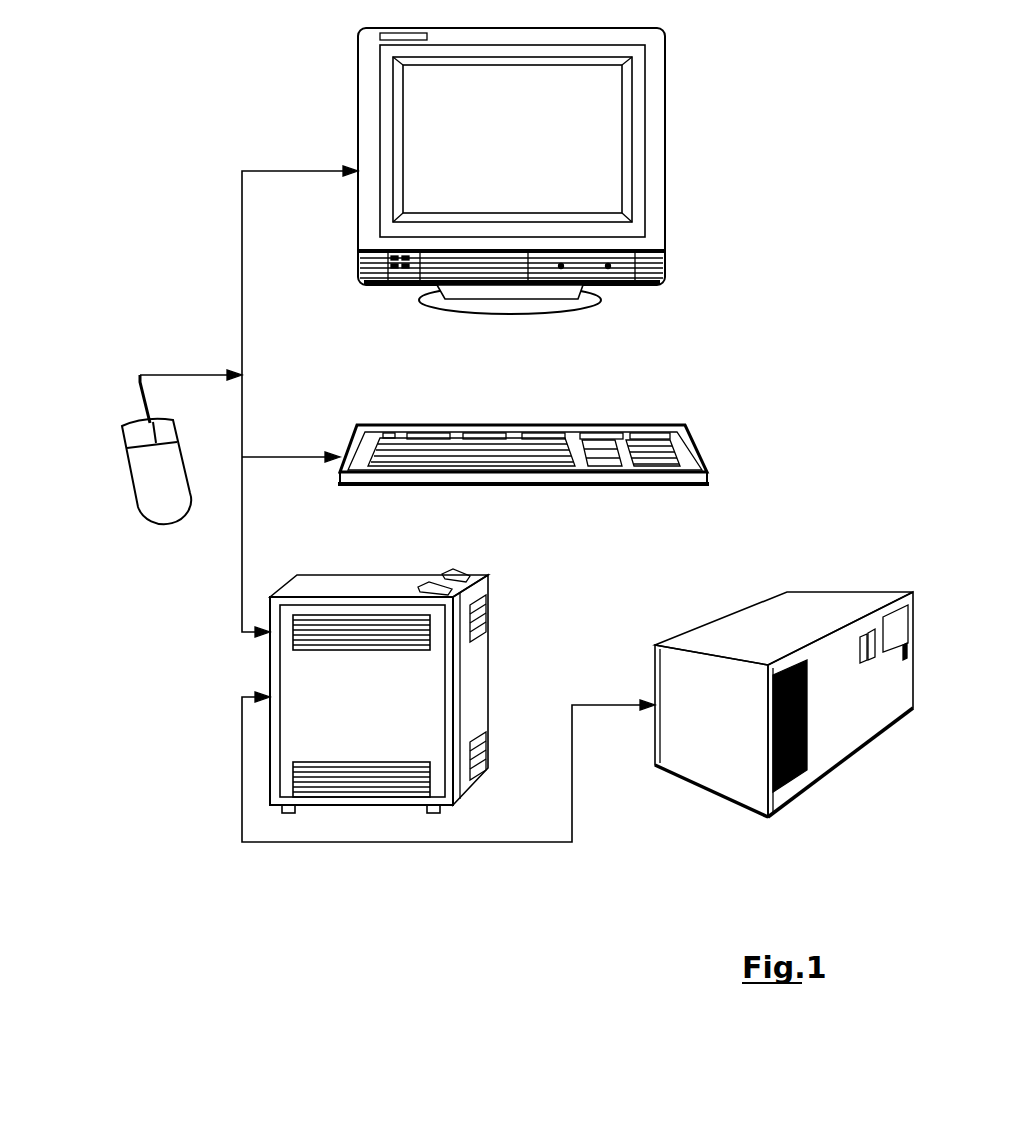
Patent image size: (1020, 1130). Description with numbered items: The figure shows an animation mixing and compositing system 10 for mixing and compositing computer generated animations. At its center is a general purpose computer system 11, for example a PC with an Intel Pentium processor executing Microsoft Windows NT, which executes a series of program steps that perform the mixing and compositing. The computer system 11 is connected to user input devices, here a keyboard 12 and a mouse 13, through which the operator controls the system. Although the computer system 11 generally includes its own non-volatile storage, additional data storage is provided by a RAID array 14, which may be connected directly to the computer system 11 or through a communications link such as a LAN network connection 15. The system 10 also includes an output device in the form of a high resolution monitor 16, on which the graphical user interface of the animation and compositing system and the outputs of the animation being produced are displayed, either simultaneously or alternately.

The animation mixing and compositing system 10 is at (768, 203).
The general purpose computer system 11 is at (500, 569).
The keyboard 12 is at (714, 449).
The mouse 13 is at (120, 497).
The RAID array 14 is at (787, 580).
The LAN network connection 15 is at (379, 504).
The high resolution monitor 16 is at (511, 171).